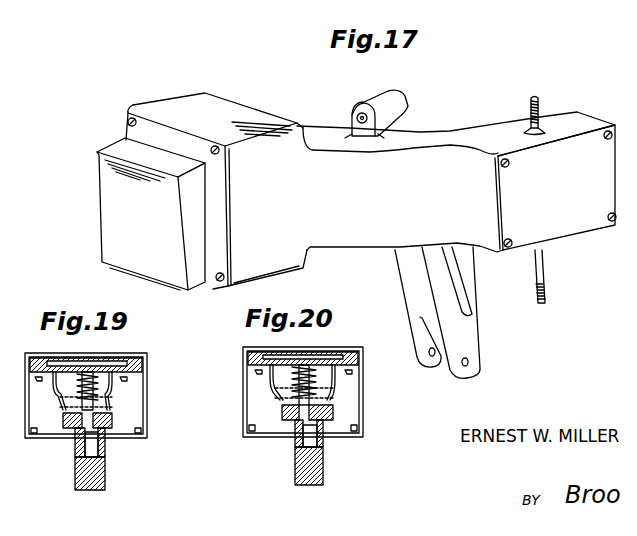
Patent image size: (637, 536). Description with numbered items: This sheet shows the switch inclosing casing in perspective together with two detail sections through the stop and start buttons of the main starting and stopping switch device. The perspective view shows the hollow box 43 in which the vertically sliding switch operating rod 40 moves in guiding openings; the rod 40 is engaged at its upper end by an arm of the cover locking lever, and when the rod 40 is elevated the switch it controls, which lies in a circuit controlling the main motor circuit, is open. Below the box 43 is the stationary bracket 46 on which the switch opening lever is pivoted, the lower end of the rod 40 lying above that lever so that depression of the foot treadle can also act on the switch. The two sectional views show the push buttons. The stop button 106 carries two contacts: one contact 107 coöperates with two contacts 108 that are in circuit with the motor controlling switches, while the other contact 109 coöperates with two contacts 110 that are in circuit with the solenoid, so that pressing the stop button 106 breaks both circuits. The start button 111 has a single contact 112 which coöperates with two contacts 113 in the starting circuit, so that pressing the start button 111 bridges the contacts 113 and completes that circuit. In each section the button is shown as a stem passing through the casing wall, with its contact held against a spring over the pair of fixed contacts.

In FIG. 17, the hollow box 43 is at (447, 131).
In FIG. 17, the switch operating rod 40 is at (540, 268).
In FIG. 17, the stationary bracket 46 is at (453, 290).
In FIG. 19, the stop button 106 is at (101, 462).
In FIG. 19, the contact 107 is at (57, 420).
In FIG. 19, the contacts 108 is at (66, 428).
In FIG. 19, the contact 109 is at (113, 417).
In FIG. 19, the contacts 110 is at (117, 397).
In FIG. 20, the start button 111 is at (326, 458).
In FIG. 20, the contact 112 is at (282, 412).
In FIG. 20, the contacts 113 is at (273, 384).